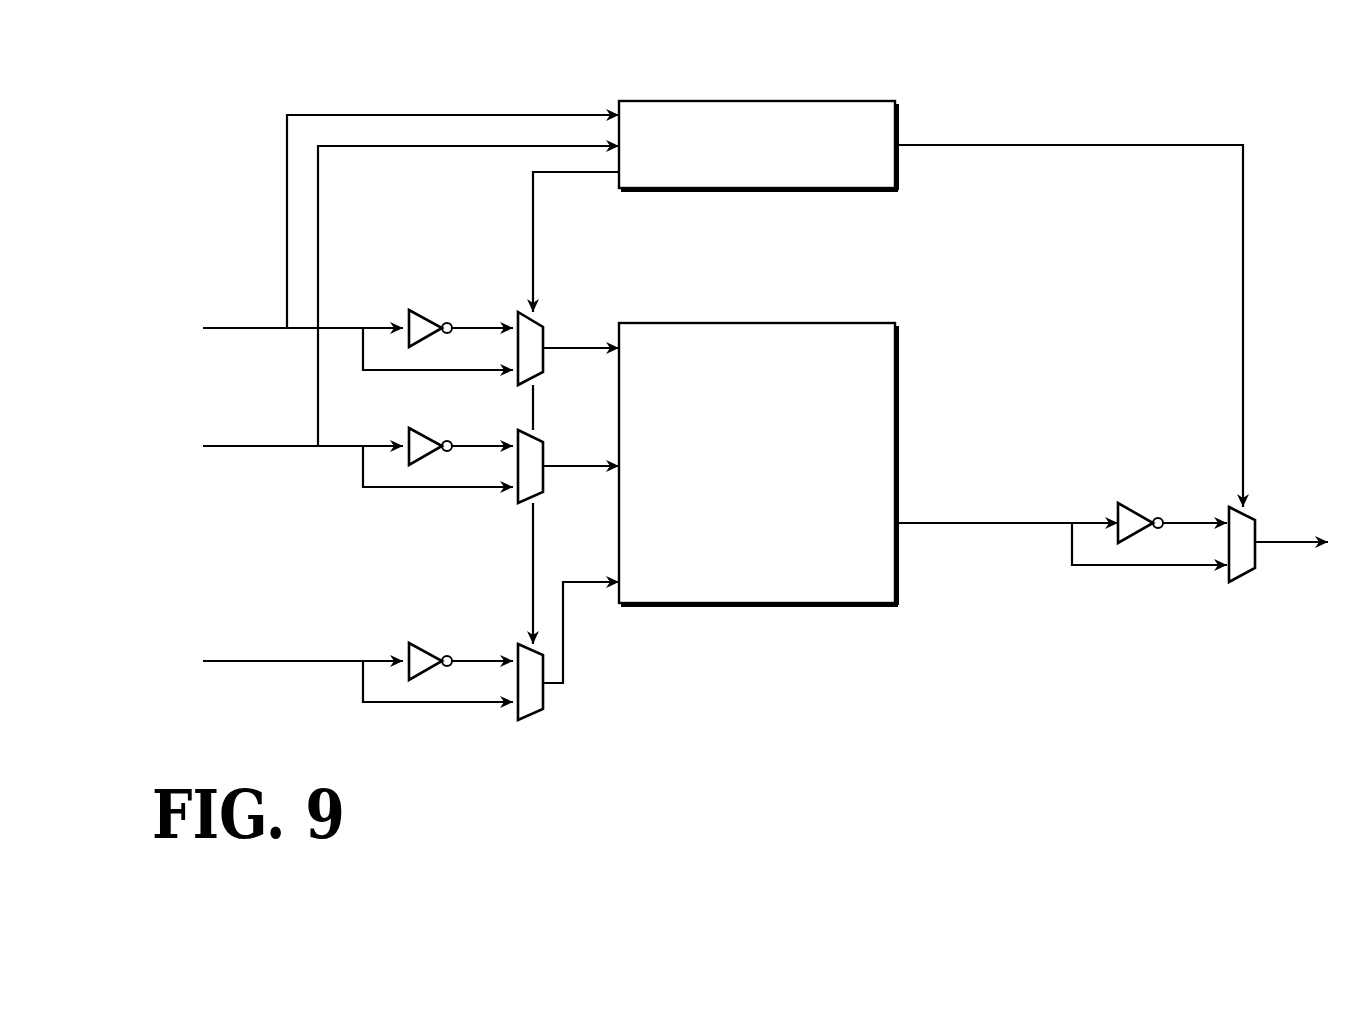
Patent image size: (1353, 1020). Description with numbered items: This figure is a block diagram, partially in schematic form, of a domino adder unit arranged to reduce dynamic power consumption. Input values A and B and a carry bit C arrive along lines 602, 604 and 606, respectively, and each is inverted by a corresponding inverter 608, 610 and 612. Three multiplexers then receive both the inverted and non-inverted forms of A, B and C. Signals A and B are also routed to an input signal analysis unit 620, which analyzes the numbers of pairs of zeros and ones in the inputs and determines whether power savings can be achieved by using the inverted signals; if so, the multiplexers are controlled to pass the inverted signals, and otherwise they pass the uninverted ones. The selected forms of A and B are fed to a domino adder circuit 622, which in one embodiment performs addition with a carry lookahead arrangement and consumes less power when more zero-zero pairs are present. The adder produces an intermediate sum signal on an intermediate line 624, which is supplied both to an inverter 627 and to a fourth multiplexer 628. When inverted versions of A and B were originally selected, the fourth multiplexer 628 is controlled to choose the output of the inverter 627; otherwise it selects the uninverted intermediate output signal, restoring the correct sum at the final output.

The line 602 is at (257, 330).
The line 604 is at (265, 448).
The line 606 is at (290, 663).
The inverter 608 is at (426, 312).
The inverter 610 is at (426, 437).
The inverter 612 is at (427, 648).
The input signal analysis unit 620 is at (898, 128).
The domino adder circuit 622 is at (899, 375).
The intermediate line 624 is at (967, 525).
The inverter 627 is at (1141, 507).
The fourth multiplexer 628 is at (1243, 583).